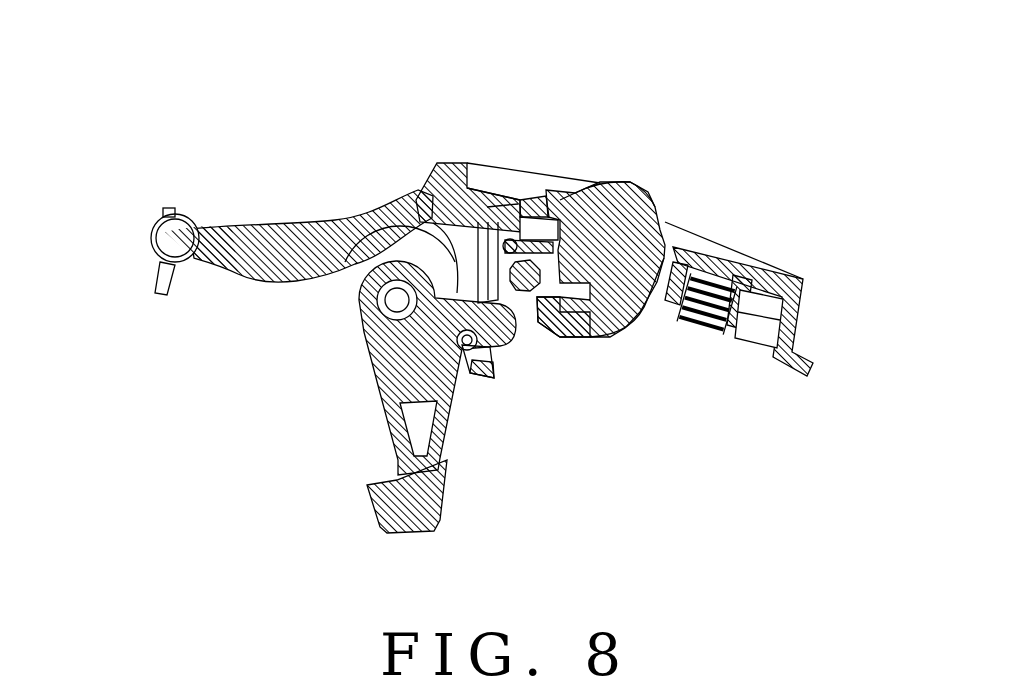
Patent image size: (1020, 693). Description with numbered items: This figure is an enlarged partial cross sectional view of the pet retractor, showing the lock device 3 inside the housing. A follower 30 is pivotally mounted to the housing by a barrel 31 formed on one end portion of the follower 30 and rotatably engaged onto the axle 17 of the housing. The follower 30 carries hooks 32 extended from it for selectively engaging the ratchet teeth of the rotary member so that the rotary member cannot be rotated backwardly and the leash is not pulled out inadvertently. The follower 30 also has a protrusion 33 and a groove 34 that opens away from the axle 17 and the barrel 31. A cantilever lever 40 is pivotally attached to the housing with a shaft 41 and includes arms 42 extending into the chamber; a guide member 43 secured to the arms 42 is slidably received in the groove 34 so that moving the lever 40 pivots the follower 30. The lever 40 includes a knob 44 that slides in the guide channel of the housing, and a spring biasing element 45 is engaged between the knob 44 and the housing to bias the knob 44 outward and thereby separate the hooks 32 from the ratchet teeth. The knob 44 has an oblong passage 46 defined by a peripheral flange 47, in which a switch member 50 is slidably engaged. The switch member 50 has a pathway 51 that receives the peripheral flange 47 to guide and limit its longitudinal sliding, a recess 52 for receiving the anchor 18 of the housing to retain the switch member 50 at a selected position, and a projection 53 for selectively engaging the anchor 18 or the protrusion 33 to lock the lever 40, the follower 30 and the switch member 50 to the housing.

The lock device 3 is at (600, 112).
The axle 17 is at (393, 303).
The anchor 18 is at (487, 207).
The follower 30 is at (387, 380).
The barrel 31 is at (360, 296).
The hooks 32 is at (380, 523).
The protrusion 33 is at (517, 328).
The groove 34 is at (500, 345).
The lever 40 is at (318, 228).
The shaft 41 is at (155, 230).
The arms 42 is at (423, 193).
The guide member 43 is at (474, 370).
The knob 44 is at (798, 312).
The spring biasing element 45 is at (700, 332).
The passage 46 is at (553, 198).
The peripheral flange 47 is at (502, 207).
The switch member 50 is at (668, 222).
The pathway 51 is at (590, 195).
The recess 52 is at (633, 313).
The projection 53 is at (592, 335).